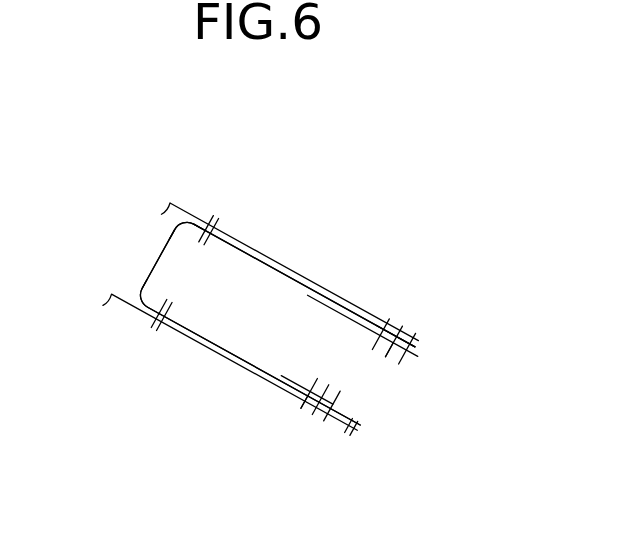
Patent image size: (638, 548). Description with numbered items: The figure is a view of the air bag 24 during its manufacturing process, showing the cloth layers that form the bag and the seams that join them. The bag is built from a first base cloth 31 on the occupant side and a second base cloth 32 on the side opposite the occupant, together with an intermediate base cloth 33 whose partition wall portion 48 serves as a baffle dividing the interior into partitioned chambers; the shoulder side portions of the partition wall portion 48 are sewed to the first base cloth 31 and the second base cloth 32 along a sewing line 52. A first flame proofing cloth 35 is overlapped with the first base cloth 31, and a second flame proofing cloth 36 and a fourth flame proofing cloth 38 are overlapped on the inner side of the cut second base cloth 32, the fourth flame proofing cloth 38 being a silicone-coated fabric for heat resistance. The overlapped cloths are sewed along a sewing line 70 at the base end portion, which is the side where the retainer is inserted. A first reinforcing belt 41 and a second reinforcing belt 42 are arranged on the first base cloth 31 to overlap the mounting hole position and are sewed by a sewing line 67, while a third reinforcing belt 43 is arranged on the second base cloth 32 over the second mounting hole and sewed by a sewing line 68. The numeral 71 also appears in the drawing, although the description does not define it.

The air bag 24 is at (203, 178).
The first base cloth 31 is at (220, 358).
The second base cloth 32 is at (284, 261).
The intermediate base cloth 33 is at (172, 231).
The first flame proofing cloth 35 is at (208, 338).
The second flame proofing cloth 36 is at (275, 270).
The fourth flame proofing cloth 38 is at (419, 348).
The first reinforcing belt 41 is at (334, 404).
The second reinforcing belt 42 is at (316, 380).
The third reinforcing belt 43 is at (418, 358).
The partition wall portion 48 is at (156, 264).
The sewing line 52 is at (216, 213).
The sewing line 67 is at (302, 410).
The sewing line 68 is at (403, 325).
The sewing line 70 is at (349, 438).
The stitch end 71 is at (386, 355).